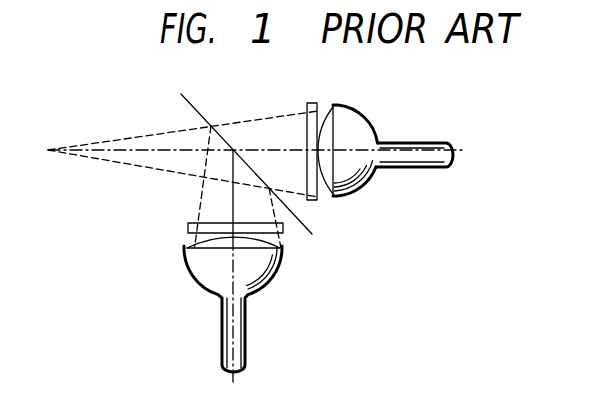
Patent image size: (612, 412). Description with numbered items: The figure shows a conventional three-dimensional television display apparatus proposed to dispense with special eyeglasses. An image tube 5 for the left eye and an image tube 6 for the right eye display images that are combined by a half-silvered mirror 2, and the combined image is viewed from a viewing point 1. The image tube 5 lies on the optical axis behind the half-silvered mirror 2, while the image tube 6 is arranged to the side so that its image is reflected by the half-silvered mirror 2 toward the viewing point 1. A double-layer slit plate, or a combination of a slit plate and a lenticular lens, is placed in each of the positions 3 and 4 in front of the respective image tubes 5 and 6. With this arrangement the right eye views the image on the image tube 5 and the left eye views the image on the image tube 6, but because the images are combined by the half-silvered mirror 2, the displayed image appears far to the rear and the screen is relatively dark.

The viewing point 1 is at (50, 148).
The half-silvered mirror 2 is at (196, 106).
The position 3 is at (310, 104).
The position 4 is at (190, 228).
The image tube 5 is at (362, 118).
The image tube 6 is at (247, 338).